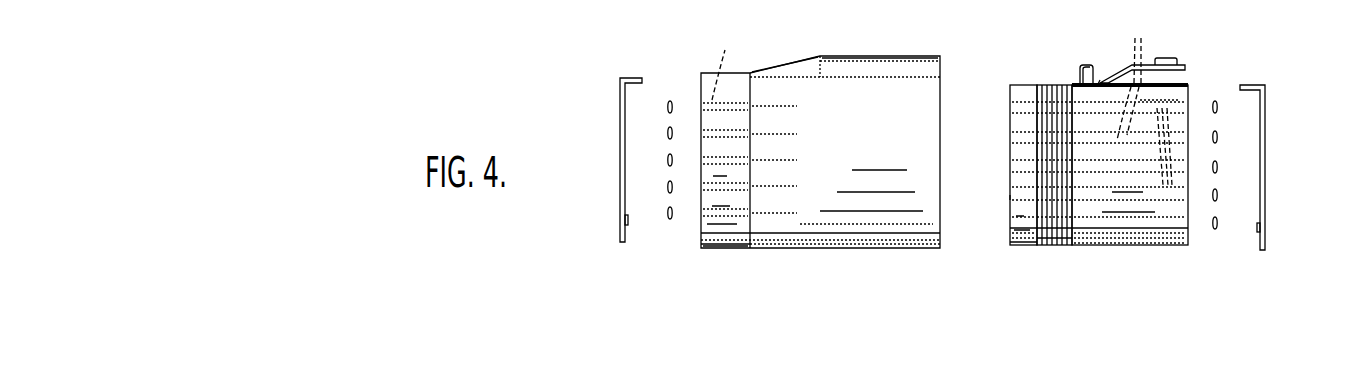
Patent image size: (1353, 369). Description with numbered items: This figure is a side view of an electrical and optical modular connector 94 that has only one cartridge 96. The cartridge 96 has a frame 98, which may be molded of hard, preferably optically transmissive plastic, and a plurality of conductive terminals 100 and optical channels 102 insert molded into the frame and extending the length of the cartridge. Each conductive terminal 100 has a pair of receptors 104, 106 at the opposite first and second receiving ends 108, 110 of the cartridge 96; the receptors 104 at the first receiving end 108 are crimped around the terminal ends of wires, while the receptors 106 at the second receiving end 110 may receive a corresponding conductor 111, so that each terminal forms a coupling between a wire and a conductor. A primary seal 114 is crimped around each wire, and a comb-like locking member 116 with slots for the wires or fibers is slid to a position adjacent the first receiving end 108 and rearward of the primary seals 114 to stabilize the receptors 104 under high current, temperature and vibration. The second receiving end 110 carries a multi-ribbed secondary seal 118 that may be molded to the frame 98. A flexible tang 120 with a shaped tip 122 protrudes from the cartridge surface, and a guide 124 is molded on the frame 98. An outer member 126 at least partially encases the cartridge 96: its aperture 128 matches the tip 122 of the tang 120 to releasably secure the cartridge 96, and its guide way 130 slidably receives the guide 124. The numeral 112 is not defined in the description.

The modular connector 94 is at (1133, 264).
The cartridge 96 is at (1201, 70).
The frame 98 is at (1098, 80).
The conductive terminals 100 is at (1144, 100).
The optical channels 102 is at (1133, 243).
The receptors 104 is at (1188, 150).
The receptors 106 is at (1010, 150).
The first receiving end 108 is at (1192, 180).
The second receiving end 110 is at (1010, 197).
The conductor 111 is at (728, 63).
The cavity 112 is at (1160, 102).
The primary seal 114 is at (666, 107).
The locking member 116 is at (618, 173).
The secondary seal 118 is at (1048, 248).
The tang 120 is at (1148, 63).
The tip 122 is at (1170, 60).
The guide 124 is at (1081, 70).
The outer member 126 is at (795, 58).
The aperture 128 is at (903, 56).
The guide way 130 is at (840, 67).